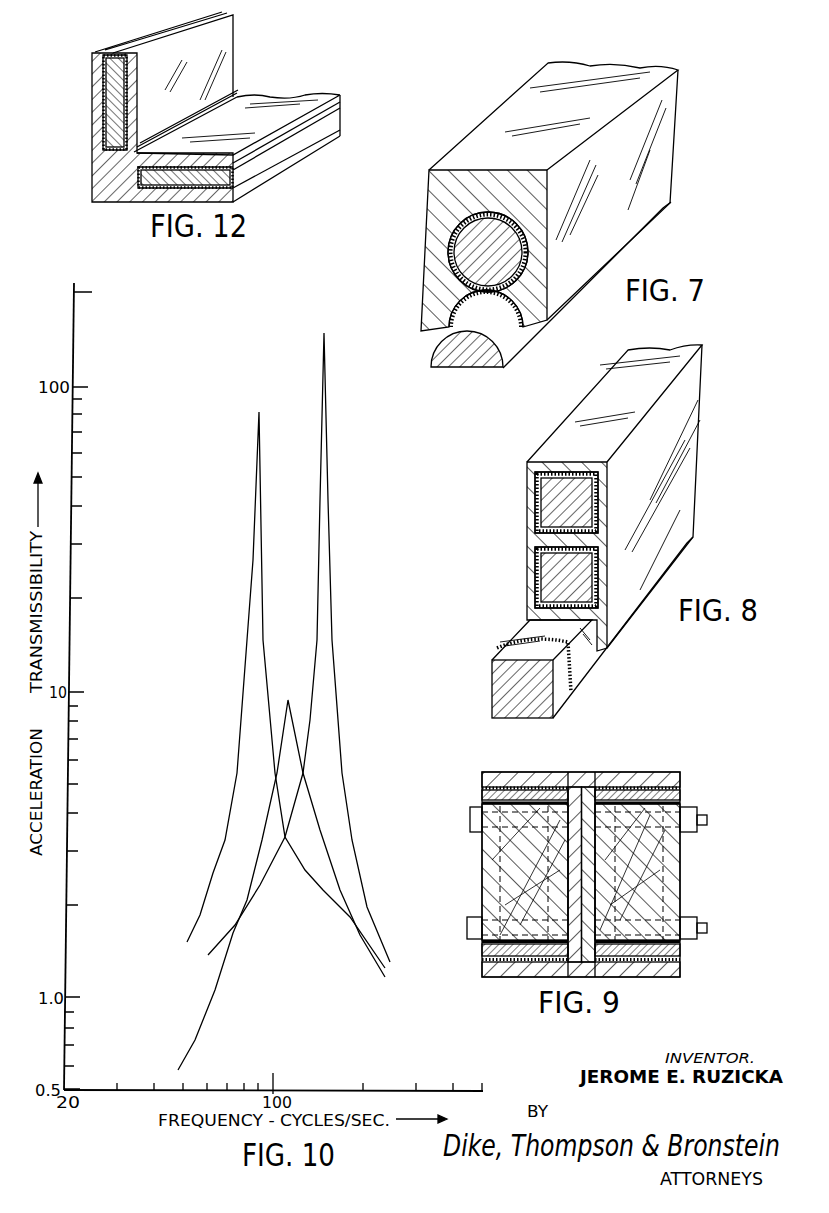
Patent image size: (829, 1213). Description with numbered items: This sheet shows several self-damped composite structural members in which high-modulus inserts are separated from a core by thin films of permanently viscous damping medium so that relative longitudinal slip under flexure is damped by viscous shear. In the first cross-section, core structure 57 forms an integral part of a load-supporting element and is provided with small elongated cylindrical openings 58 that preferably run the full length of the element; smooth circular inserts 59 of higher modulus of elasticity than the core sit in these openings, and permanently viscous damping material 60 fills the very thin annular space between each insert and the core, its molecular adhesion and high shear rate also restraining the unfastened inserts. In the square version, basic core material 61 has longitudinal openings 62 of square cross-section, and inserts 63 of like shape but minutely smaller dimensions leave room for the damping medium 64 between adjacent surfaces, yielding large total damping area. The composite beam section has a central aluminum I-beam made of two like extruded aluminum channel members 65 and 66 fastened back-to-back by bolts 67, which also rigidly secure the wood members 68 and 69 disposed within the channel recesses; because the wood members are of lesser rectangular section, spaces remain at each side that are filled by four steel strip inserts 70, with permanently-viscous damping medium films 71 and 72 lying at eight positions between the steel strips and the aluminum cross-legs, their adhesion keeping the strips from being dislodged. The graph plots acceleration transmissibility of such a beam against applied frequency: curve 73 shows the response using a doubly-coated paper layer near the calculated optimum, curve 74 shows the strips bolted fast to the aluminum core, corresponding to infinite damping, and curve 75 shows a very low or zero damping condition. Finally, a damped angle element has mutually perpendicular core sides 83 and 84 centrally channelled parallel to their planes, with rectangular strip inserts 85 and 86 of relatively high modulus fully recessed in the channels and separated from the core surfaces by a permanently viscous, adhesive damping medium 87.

In FIG. 7, the core structure 57 is at (462, 152).
In FIG. 7, the elongated cylindrical openings 58 is at (527, 270).
In FIG. 7, the inserts 59 is at (470, 248).
In FIG. 7, the permanently viscous damping material 60 is at (518, 238).
In FIG. 8, the basic core material 61 is at (527, 492).
In FIG. 8, the longitudinal openings 62 is at (596, 490).
In FIG. 8, the inserts 63 is at (555, 518).
In FIG. 8, the damping medium 64 is at (535, 571).
In FIG. 9, the extruded aluminum channel member 65 is at (548, 776).
In FIG. 9, the extruded aluminum channel member 66 is at (648, 775).
In FIG. 9, the bolts 67 is at (700, 818).
In FIG. 9, the wood member 68 is at (493, 865).
In FIG. 9, the wood member 69 is at (672, 872).
In FIG. 9, the steel strip inserts 70 is at (483, 795).
In FIG. 9, the permanently-viscous damping medium film 71 is at (490, 788).
In FIG. 9, the permanently-viscous damping medium film 72 is at (483, 804).
In FIG. 10, the curve 73 is at (290, 706).
In FIG. 10, the curve 74 is at (330, 628).
In FIG. 10, the curve 75 is at (247, 645).
In FIG. 12, the core side 83 is at (218, 43).
In FIG. 12, the core side 84 is at (270, 126).
In FIG. 12, the strip insert 85 is at (112, 93).
In FIG. 12, the strip insert 86 is at (273, 157).
In FIG. 12, the damping medium 87 is at (103, 135).